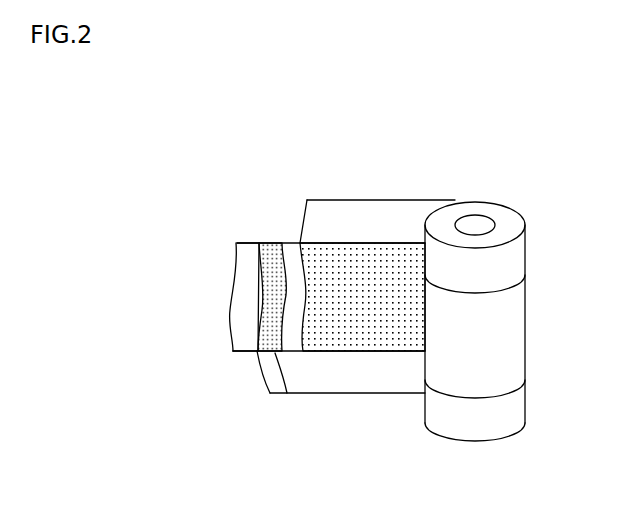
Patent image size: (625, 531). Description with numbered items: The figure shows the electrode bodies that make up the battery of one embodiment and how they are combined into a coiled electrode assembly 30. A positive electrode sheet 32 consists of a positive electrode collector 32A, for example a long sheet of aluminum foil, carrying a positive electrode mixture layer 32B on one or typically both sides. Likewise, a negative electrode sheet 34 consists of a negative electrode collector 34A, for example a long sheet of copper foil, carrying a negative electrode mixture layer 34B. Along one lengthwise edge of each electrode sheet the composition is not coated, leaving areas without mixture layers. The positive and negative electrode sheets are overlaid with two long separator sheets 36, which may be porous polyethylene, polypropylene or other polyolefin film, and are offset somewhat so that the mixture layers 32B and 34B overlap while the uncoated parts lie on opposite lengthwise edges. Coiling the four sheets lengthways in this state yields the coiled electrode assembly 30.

The coiled electrode assembly 30 is at (519, 434).
The positive electrode sheet 32 is at (385, 230).
The positive electrode collector 32A is at (388, 212).
The positive electrode mixture layer 32B is at (346, 252).
The negative electrode sheet 34 is at (341, 419).
The negative electrode collector 34A is at (336, 390).
The negative electrode mixture layer 34B is at (287, 393).
The separator sheets 36 is at (246, 250).